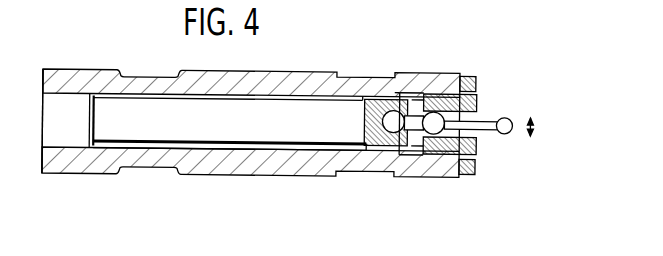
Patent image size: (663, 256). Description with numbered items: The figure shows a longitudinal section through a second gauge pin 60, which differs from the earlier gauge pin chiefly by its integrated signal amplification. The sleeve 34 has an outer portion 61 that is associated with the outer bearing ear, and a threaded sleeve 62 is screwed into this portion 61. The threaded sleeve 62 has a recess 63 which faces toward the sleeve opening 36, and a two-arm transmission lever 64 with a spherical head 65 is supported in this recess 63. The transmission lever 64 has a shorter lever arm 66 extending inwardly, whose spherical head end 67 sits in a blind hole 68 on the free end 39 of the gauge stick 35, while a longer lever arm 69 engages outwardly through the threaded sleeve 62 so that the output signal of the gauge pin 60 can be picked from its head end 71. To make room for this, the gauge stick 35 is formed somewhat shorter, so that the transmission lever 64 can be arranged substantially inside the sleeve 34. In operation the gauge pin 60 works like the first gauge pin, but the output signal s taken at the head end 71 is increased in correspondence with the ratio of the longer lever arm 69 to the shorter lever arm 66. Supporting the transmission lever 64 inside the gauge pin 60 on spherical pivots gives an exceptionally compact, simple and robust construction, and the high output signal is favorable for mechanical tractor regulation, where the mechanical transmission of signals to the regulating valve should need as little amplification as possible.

The second gauge pin 60 is at (122, 58).
The free end of the gauge stick 39 is at (365, 106).
The ball 68 is at (395, 107).
The shorter lever arm 66 is at (415, 110).
The spherical head 65 is at (434, 95).
The transmission lever 64 is at (488, 112).
The head end 71 is at (531, 118).
The longer lever arm 69 is at (499, 133).
The threaded sleeve 62 is at (478, 160).
The outer portion 61 is at (446, 166).
The recess 63 is at (412, 156).
The spherical head end 67 is at (390, 153).
The gauge stick 35 is at (265, 146).
The sleeve opening 36 is at (214, 148).
The sleeve 34 is at (163, 157).